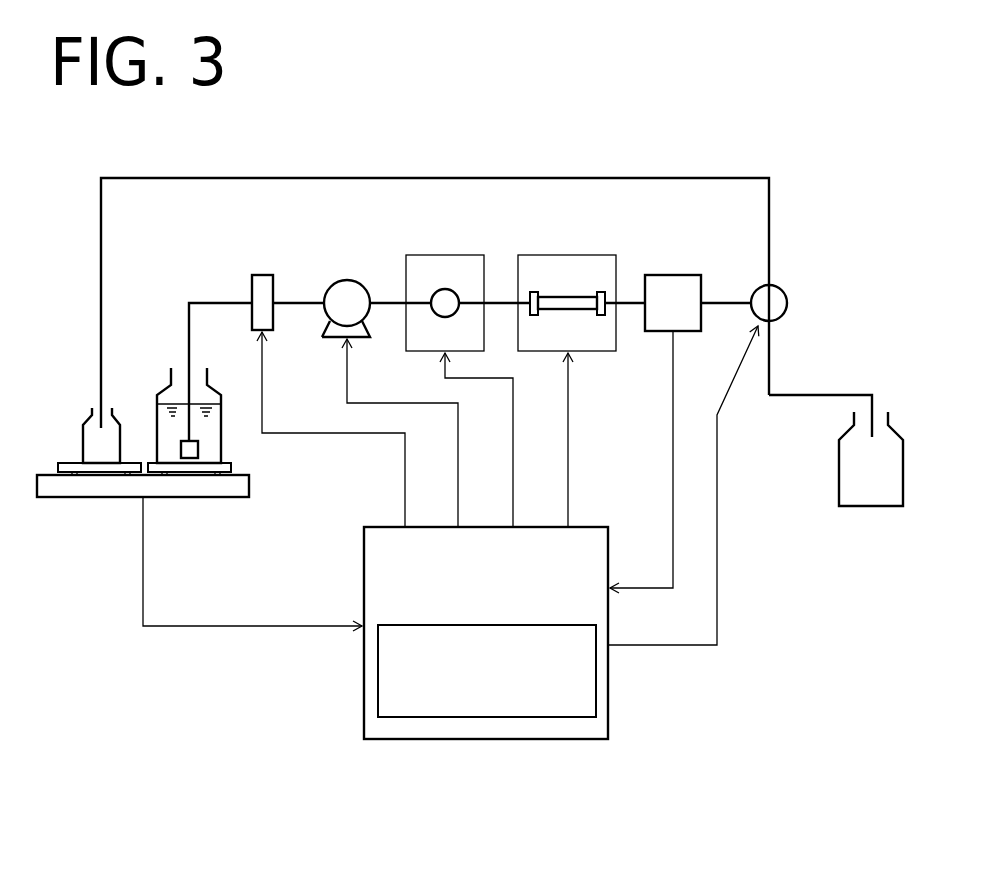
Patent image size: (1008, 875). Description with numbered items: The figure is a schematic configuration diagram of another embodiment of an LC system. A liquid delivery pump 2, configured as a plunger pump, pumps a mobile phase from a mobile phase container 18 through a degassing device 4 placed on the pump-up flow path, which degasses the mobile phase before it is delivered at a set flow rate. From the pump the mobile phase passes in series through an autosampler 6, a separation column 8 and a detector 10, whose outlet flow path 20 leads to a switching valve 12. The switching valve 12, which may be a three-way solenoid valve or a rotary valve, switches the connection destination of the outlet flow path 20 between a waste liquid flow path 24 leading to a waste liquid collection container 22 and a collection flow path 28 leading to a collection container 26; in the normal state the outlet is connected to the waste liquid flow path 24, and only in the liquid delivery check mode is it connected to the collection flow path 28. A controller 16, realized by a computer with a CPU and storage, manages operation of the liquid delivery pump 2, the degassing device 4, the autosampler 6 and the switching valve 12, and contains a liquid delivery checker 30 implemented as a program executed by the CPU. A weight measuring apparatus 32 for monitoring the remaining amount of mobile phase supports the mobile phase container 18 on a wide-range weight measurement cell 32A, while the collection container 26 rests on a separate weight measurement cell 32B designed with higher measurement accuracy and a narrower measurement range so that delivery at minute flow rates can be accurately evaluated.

The liquid delivery pump 2 is at (348, 278).
The degassing device 4 is at (263, 273).
The autosampler 6 is at (466, 255).
The separation column 8 is at (568, 300).
The detector 10 is at (679, 275).
The switching valve 12 is at (782, 315).
The controller 16 is at (600, 523).
The mobile phase container 18 is at (222, 435).
The outlet flow path 20 is at (723, 305).
The waste liquid collection container 22 is at (863, 508).
The waste liquid flow path 24 is at (795, 397).
The collection container 26 is at (82, 438).
The collection flow path 28 is at (631, 178).
The liquid delivery checker 30 is at (532, 625).
The weight measuring apparatus 32 is at (176, 508).
The weight measurement cell 32A is at (188, 468).
The weight measurement cell 32B is at (100, 468).